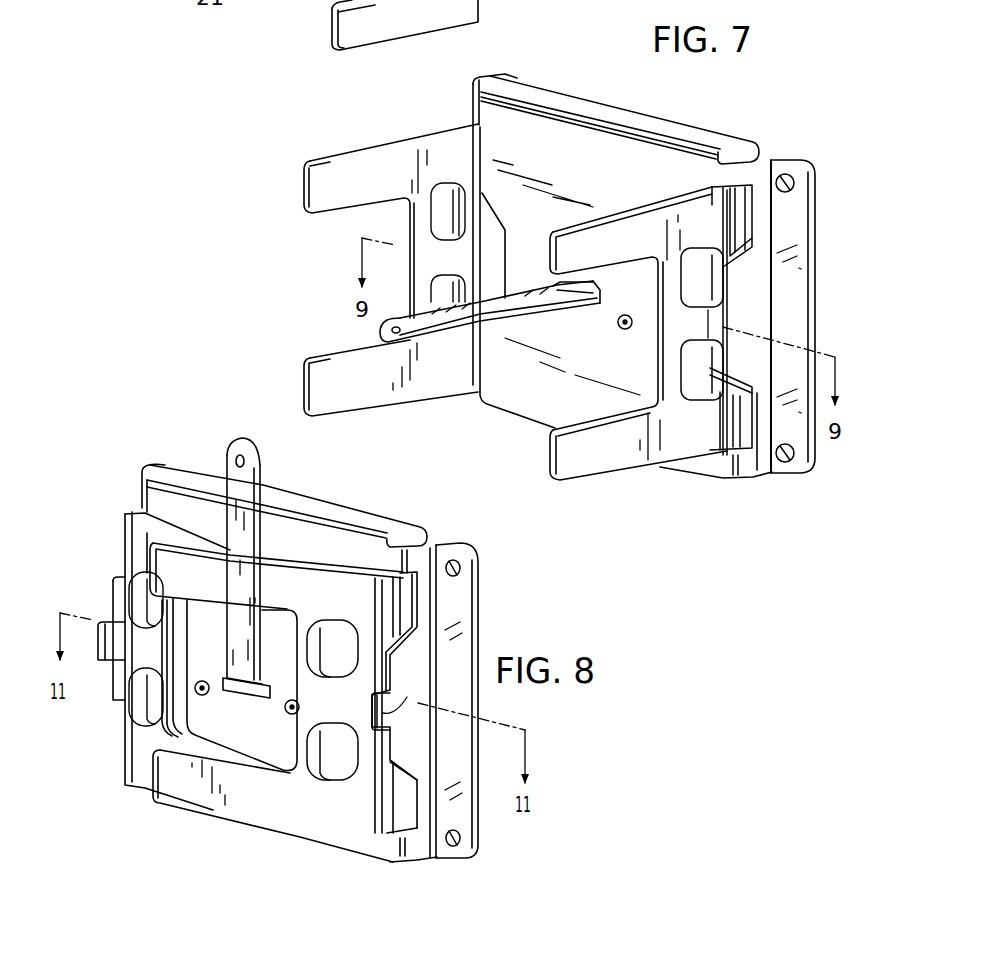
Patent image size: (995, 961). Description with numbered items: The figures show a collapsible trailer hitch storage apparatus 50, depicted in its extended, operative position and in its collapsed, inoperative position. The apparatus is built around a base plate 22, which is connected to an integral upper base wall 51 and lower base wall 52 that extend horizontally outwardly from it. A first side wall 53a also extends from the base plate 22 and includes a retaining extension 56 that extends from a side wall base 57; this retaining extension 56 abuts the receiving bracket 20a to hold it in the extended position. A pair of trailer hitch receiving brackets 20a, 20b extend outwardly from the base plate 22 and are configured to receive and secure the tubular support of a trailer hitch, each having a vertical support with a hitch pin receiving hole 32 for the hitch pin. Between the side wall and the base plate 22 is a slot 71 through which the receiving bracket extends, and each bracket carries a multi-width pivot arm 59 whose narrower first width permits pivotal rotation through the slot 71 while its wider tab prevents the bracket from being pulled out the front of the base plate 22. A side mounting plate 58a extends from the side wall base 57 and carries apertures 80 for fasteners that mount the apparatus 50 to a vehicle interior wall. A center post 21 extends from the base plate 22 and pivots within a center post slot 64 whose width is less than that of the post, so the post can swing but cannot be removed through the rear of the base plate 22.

In FIG. 7, the trailer hitch storage apparatus 50 is at (565, 64).
In FIG. 8, the trailer hitch storage apparatus 50 is at (112, 456).
In FIG. 7, the upper base wall 51 is at (645, 110).
In FIG. 7, the base plate 22 is at (672, 153).
In FIG. 7, the trailer hitch receiving bracket 20a is at (634, 220).
In FIG. 8, the trailer hitch receiving bracket 20a is at (300, 573).
In FIG. 7, the trailer hitch receiving bracket 20b is at (377, 160).
In FIG. 7, the center post 21 is at (497, 310).
In FIG. 8, the center post 21 is at (247, 474).
In FIG. 7, the slot 71 is at (738, 203).
In FIG. 7, the first side wall 53a is at (760, 284).
In FIG. 7, the side mounting plate 58a is at (800, 297).
In FIG. 7, the retaining extension 56 is at (713, 333).
In FIG. 8, the retaining extension 56 is at (405, 704).
In FIG. 7, the side wall base 57 is at (757, 368).
In FIG. 7, the aperture 80 is at (781, 462).
In FIG. 8, the aperture 80 is at (450, 560).
In FIG. 7, the hitch pin receiving hole 32 is at (695, 370).
In FIG. 7, the lower base wall 52 is at (693, 470).
In FIG. 7, the center post slot 64 is at (596, 308).
In FIG. 8, the pivot arm 59 is at (402, 807).